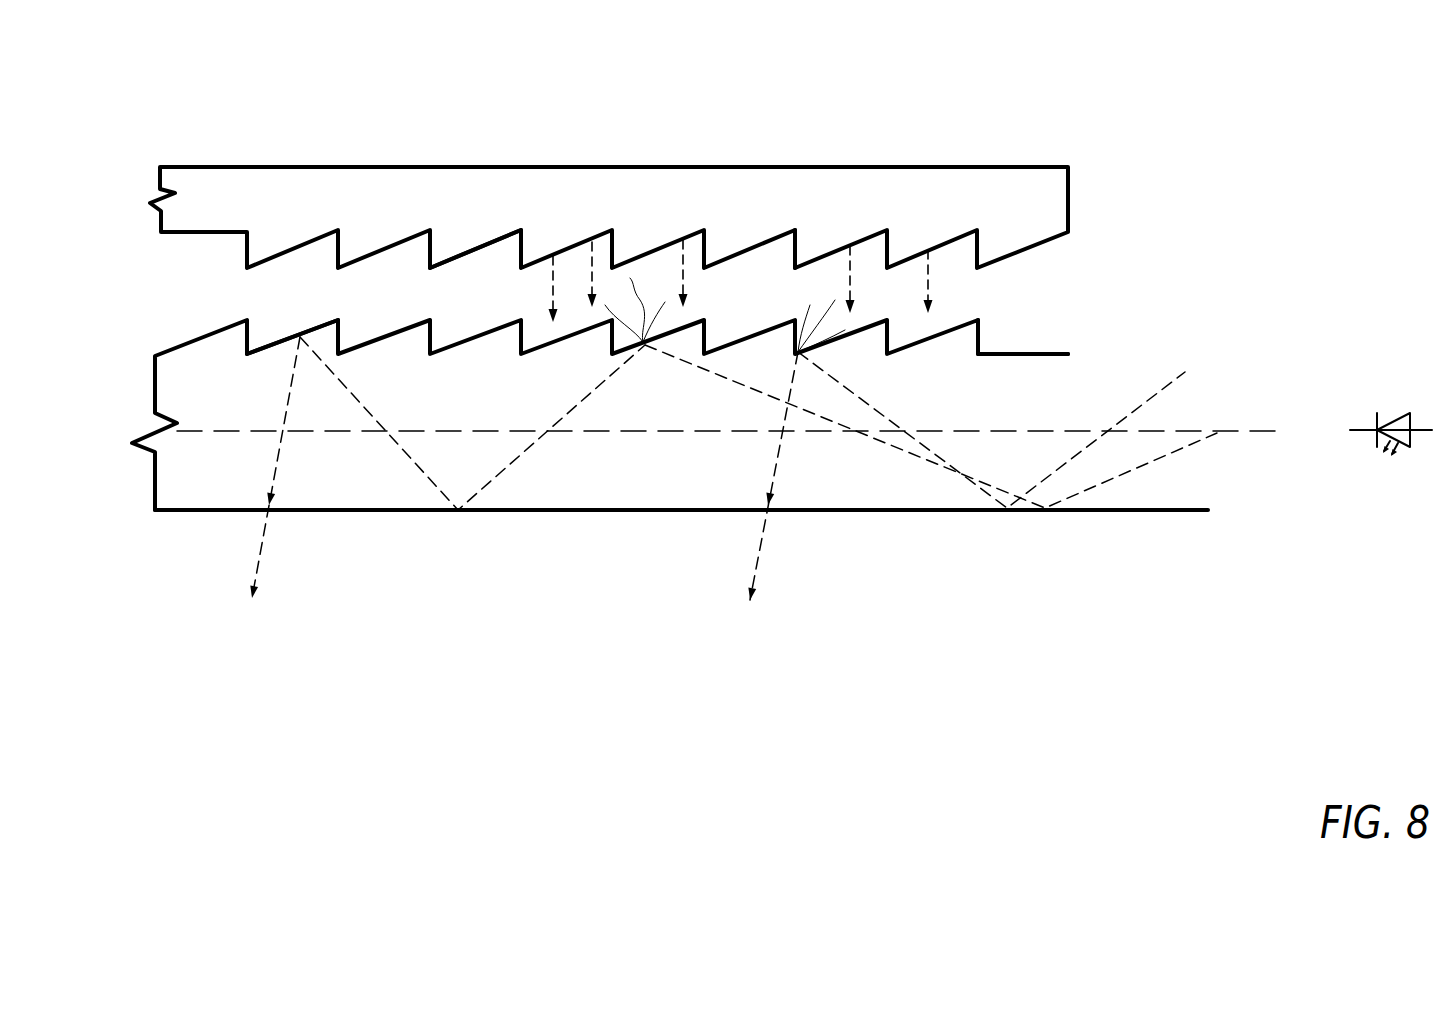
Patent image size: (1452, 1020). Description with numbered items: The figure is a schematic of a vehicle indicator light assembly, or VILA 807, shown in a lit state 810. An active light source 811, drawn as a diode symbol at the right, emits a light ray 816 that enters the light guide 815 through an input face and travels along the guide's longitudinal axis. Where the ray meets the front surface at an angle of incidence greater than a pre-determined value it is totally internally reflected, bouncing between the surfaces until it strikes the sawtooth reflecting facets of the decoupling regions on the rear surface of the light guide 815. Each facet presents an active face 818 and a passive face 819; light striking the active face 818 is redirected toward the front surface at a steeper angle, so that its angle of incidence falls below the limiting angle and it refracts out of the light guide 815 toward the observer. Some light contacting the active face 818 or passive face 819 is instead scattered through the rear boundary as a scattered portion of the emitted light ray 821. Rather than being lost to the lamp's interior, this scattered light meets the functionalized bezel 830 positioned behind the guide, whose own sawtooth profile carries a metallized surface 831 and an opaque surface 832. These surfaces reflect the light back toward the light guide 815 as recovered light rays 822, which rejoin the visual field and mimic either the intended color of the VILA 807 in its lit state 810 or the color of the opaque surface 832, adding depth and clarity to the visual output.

The vehicle indicator light assembly 807 is at (1275, 100).
The lit state 810 is at (1093, 627).
The active light source 811 is at (1382, 472).
The light guide 815 is at (599, 430).
The emitted light ray 816 is at (1205, 368).
The active face 818 is at (273, 340).
The passive face 819 is at (982, 333).
The scattered portion of the emitted light ray 821 is at (650, 287).
The recovered light rays 822 is at (932, 297).
The functionalized bezel 830 is at (664, 182).
The metallized surface 831 is at (482, 243).
The opaque surface 832 is at (798, 252).